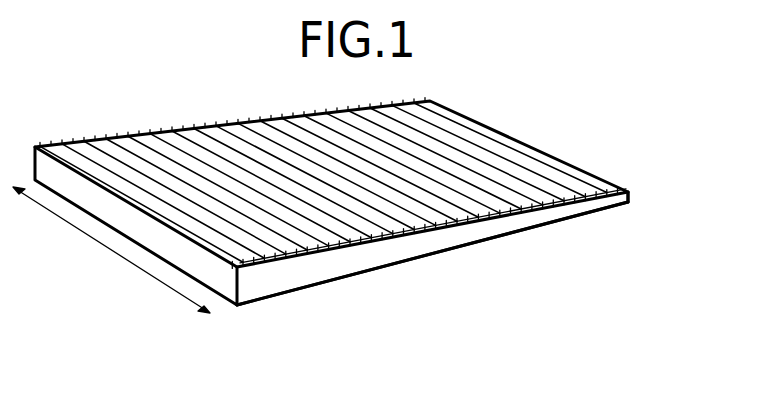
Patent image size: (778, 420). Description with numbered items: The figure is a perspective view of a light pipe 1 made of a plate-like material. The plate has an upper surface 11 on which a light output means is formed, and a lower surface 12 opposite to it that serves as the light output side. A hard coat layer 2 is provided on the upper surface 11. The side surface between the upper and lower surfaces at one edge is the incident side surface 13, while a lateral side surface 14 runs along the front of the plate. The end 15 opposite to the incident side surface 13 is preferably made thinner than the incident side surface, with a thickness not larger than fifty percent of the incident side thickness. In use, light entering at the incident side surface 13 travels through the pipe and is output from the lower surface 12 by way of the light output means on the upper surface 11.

The light pipe 1 is at (603, 138).
The hard coat layer 2 is at (73, 174).
The upper surface 11 is at (138, 160).
The lower surface 12 is at (337, 282).
The incident side surface 13 is at (120, 220).
The lateral side surface 14 is at (443, 243).
The end opposite to the incident side surface 15 is at (630, 198).